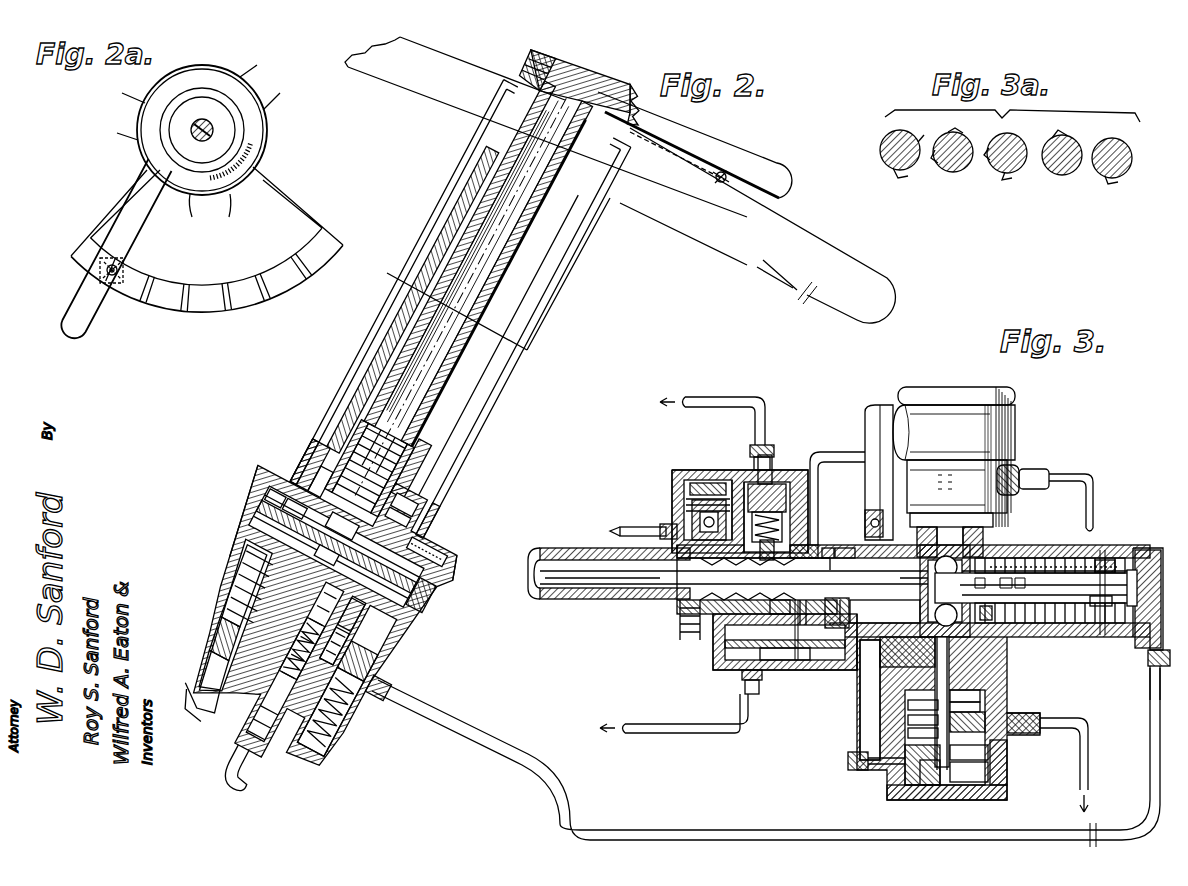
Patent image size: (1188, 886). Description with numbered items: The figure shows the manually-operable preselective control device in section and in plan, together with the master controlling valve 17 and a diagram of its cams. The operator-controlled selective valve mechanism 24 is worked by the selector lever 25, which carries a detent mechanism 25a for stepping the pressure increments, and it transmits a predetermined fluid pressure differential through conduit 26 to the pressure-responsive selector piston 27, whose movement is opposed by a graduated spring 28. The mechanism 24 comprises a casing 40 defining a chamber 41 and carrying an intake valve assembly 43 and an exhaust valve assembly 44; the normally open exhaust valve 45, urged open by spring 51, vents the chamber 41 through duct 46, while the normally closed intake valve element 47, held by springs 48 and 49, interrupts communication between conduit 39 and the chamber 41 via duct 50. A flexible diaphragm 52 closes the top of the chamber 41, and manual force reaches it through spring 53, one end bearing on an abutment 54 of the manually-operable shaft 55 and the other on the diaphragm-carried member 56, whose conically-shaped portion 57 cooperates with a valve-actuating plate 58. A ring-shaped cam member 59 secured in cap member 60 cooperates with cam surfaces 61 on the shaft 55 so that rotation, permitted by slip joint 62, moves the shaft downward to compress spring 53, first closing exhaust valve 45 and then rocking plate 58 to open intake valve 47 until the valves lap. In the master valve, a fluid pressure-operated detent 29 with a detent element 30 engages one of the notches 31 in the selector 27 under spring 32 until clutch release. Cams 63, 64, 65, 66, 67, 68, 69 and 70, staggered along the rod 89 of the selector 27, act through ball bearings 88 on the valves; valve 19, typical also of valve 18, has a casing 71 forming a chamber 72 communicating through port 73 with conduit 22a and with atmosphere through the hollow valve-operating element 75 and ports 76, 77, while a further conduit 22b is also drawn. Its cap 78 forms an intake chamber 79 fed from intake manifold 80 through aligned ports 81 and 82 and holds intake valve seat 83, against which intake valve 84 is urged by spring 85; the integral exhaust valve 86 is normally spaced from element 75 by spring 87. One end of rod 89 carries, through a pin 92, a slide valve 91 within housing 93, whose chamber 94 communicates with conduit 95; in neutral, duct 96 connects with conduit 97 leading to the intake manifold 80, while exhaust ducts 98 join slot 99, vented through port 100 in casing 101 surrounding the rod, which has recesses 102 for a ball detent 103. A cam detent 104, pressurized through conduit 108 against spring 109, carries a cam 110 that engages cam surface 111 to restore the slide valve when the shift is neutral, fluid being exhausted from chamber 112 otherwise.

In FIG. 3, the master controlling valve 17 is at (1022, 442).
In FIG. 3, the valve 18 is at (1016, 405).
In FIG. 3, the valve 19 is at (1005, 790).
In FIG. 3, the conduit 22a is at (1088, 733).
In FIG. 3, the pipe connection 22b is at (1093, 486).
In FIG. 2, the operator-controlled selective valve mechanism 24 is at (423, 615).
In FIG. 2A, the selector lever 25 is at (96, 312).
In FIG. 2, the selector lever 25 is at (713, 143).
In FIG. 2A, the detent mechanism 25a is at (126, 268).
In FIG. 2, the detent mechanism 25a is at (729, 177).
In FIG. 2, the conduit 26 is at (442, 722).
In FIG. 3, the conduit 26 is at (1150, 692).
In FIG. 3, the selector piston 27 is at (1135, 552).
In FIG. 3, the graduated spring 28 is at (1080, 625).
In FIG. 3, the fluid pressure-operated detent 29 is at (712, 455).
In FIG. 3, the detent element 30 is at (700, 516).
In FIG. 3, the notches 31 is at (700, 576).
In FIG. 3, the spring 32 is at (690, 488).
In FIG. 2, the conduit 39 is at (243, 768).
In FIG. 2, the casing 40 is at (430, 570).
In FIG. 2, the chamber 41 is at (248, 541).
In FIG. 2, the intake valve assembly 43 is at (385, 648).
In FIG. 2, the exhaust valve assembly 44 is at (245, 585).
In FIG. 2, the exhaust valve 45 is at (240, 600).
In FIG. 2, the duct 46 is at (240, 612).
In FIG. 2, the intake valve element 47 is at (370, 660).
In FIG. 2, the spring 48 is at (345, 718).
In FIG. 2, the spring 49 is at (385, 628).
In FIG. 2, the duct 50 is at (340, 696).
In FIG. 2, the spring 51 is at (250, 562).
In FIG. 2, the flexible diaphragm 52 is at (410, 547).
In FIG. 2, the spring 53 is at (418, 455).
In FIG. 2, the abutment 54 is at (385, 422).
In FIG. 2, the manually-operable shaft 55 is at (424, 435).
In FIG. 2, the diaphragm-carried member 56 is at (433, 520).
In FIG. 2, the conically-shaped portion 57 is at (430, 533).
In FIG. 2, the valve-actuating plate 58 is at (425, 592).
In FIG. 2, the ring-shaped cam member 59 is at (436, 505).
In FIG. 2, the cap member 60 is at (335, 462).
In FIG. 2, the cam surfaces 61 is at (318, 480).
In FIG. 2, the slip joint 62 is at (452, 352).
In FIG. 3A, the cam 63 is at (900, 170).
In FIG. 3A, the cam 64 is at (918, 144).
In FIG. 3, the cam 64 is at (950, 578).
In FIG. 3A, the cam 65 is at (956, 132).
In FIG. 3, the cam 65 is at (1003, 560).
In FIG. 3A, the cam 66 is at (935, 158).
In FIG. 3, the cam 66 is at (1015, 625).
In FIG. 3A, the cam 67 is at (1010, 174).
In FIG. 3, the cam 67 is at (1005, 625).
In FIG. 3A, the cam 68 is at (987, 157).
In FIG. 3, the cam 68 is at (1030, 558).
In FIG. 3A, the cam 69 is at (1060, 133).
In FIG. 3, the cam 69 is at (1058, 565).
In FIG. 3A, the cam 70 is at (1112, 178).
In FIG. 3, the cam 70 is at (1090, 623).
In FIG. 3, the casing 71 is at (978, 705).
In FIG. 3, the chamber 72 is at (985, 718).
In FIG. 3, the port 73 is at (1020, 733).
In FIG. 3, the hollow reciprocating valve-operating element 75 is at (915, 668).
In FIG. 3, the port 76 is at (975, 695).
In FIG. 3, the port 77 is at (950, 660).
In FIG. 3, the cap 78 is at (965, 795).
In FIG. 3, the intake chamber 79 is at (915, 775).
In FIG. 3, the intake manifold 80 is at (870, 738).
In FIG. 3, the port 81 is at (885, 766).
In FIG. 3, the port 82 is at (855, 768).
In FIG. 3, the intake valve seat 83 is at (988, 752).
In FIG. 3, the intake valve 84 is at (988, 772).
In FIG. 3, the spring 85 is at (930, 790).
In FIG. 3, the exhaust valve 86 is at (910, 705).
In FIG. 3, the spring 87 is at (910, 732).
In FIG. 3, the ball bearing 88 is at (907, 652).
In FIG. 3, the rod 89 is at (885, 610).
In FIG. 3, the slide valve 91 is at (825, 630).
In FIG. 3, the pin 92 is at (720, 640).
In FIG. 3, the housing 93 is at (760, 655).
In FIG. 3, the chamber 94 is at (742, 684).
In FIG. 3, the conduit 95 is at (712, 730).
In FIG. 3, the duct 96 is at (797, 662).
In FIG. 3, the conduit 97 is at (816, 470).
In FIG. 3, the exhaust ducts 98 is at (782, 620).
In FIG. 3, the slot 99 is at (728, 652).
In FIG. 3, the port 100 is at (818, 545).
In FIG. 3, the casing 101 is at (842, 541).
In FIG. 3, the recesses 102 is at (690, 584).
In FIG. 3, the ball detent 103 is at (682, 625).
In FIG. 3, the cam detent 104 is at (768, 482).
In FIG. 3, the conduit 108 is at (710, 400).
In FIG. 3, the spring 109 is at (770, 500).
In FIG. 3, the cam 110 is at (913, 591).
In FIG. 3, the cam surface 111 is at (800, 546).
In FIG. 3, the chamber 112 is at (766, 460).